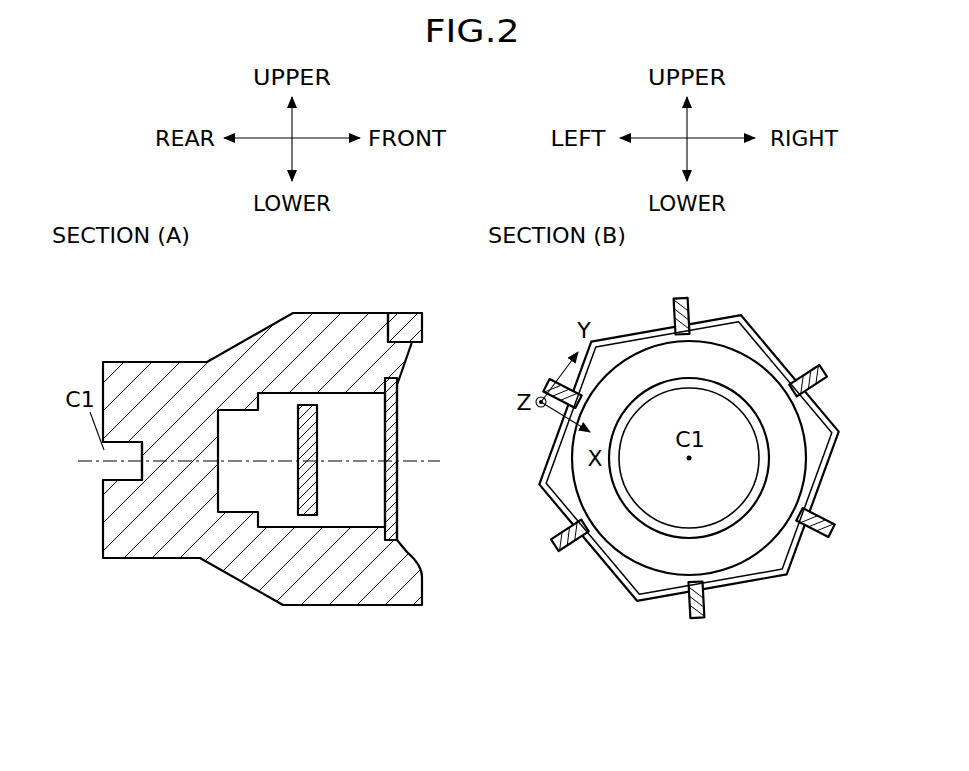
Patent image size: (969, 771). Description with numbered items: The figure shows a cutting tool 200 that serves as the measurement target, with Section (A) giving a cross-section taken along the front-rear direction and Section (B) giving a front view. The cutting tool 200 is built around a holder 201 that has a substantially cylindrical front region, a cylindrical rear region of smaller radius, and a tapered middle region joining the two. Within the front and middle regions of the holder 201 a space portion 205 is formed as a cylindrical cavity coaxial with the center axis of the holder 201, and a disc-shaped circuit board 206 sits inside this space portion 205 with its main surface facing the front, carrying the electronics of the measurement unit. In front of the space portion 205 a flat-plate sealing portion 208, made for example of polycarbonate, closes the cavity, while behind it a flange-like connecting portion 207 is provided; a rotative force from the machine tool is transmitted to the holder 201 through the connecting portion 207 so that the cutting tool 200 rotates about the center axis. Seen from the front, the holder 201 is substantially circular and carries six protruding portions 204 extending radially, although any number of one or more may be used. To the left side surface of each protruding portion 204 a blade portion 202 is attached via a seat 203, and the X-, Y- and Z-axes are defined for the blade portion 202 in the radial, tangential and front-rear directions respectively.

The cutting tool 200 is at (227, 332).
The holder 201 is at (342, 333).
The blade portion 202 is at (404, 323).
The seat 203 is at (698, 318).
The protruding portion 204 is at (738, 333).
The space portion 205 is at (355, 497).
The circuit board 206 is at (308, 510).
The connecting portion 207 is at (173, 468).
The sealing portion 208 is at (395, 455).